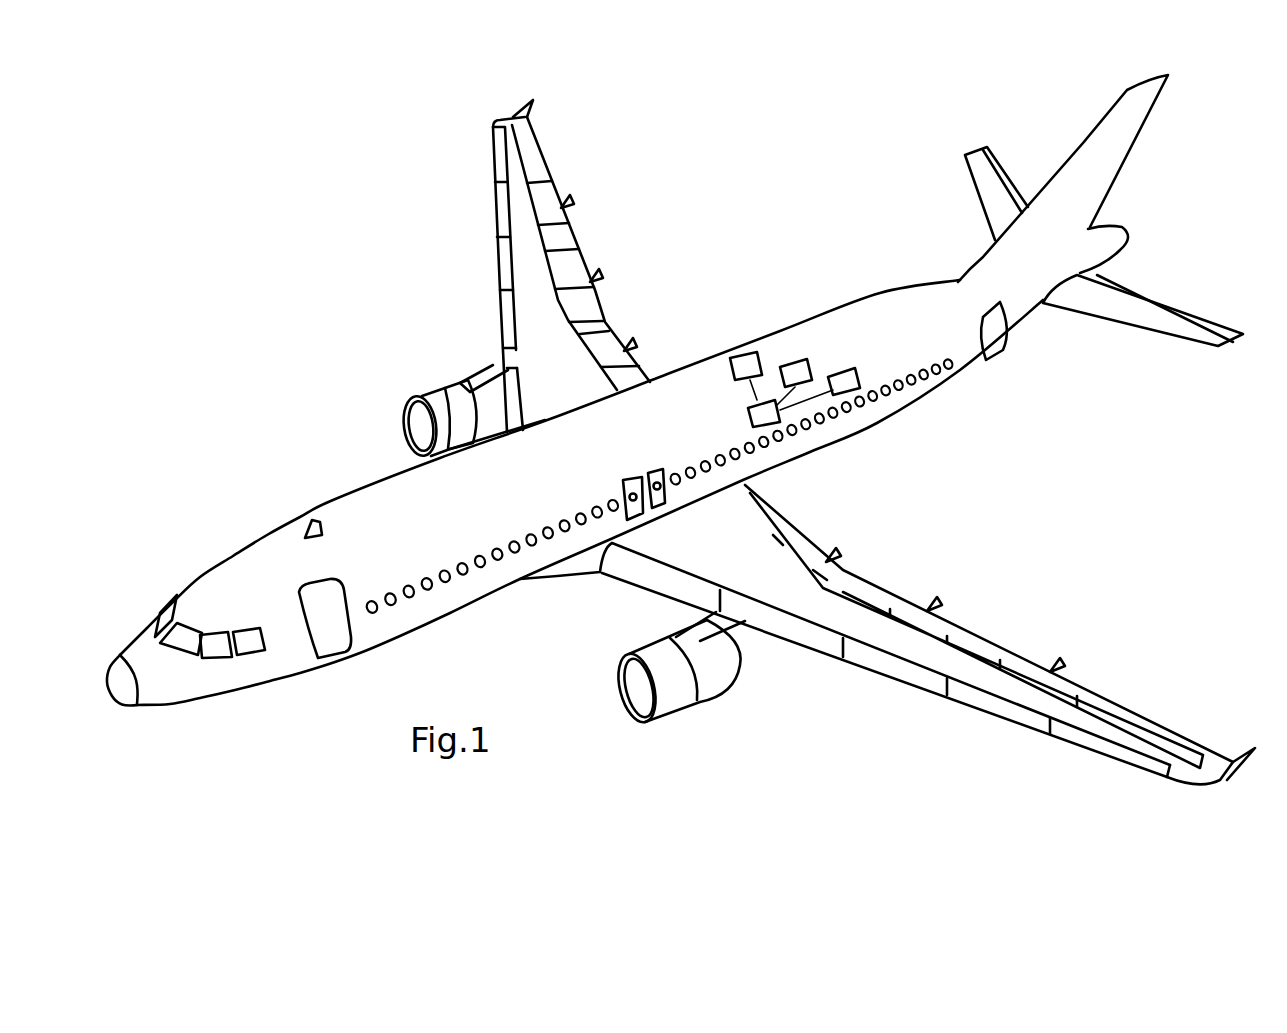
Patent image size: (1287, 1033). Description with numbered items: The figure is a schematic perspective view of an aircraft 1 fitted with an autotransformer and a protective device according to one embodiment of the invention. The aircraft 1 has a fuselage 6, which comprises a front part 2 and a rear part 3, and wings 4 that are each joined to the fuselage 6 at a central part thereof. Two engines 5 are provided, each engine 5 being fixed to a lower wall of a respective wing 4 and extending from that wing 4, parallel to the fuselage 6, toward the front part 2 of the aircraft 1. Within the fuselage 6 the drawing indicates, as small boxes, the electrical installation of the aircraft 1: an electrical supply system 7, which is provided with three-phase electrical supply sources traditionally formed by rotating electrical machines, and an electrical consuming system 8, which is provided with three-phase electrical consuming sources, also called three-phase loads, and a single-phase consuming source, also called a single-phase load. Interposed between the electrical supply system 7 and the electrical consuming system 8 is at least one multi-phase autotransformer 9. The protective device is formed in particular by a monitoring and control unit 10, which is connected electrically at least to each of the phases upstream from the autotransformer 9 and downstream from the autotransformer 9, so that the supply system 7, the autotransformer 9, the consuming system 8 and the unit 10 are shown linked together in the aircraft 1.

The aircraft 1 is at (196, 304).
The front part 2 is at (184, 513).
The rear part 3 is at (1077, 371).
The wings 4 is at (515, 163).
The engines 5 is at (442, 392).
The fuselage 6 is at (336, 493).
The electrical supply system 7 is at (747, 363).
The electrical consuming system 8 is at (847, 395).
The multi-phase autotransformer 9 is at (765, 427).
The monitoring and control unit 10 is at (795, 368).